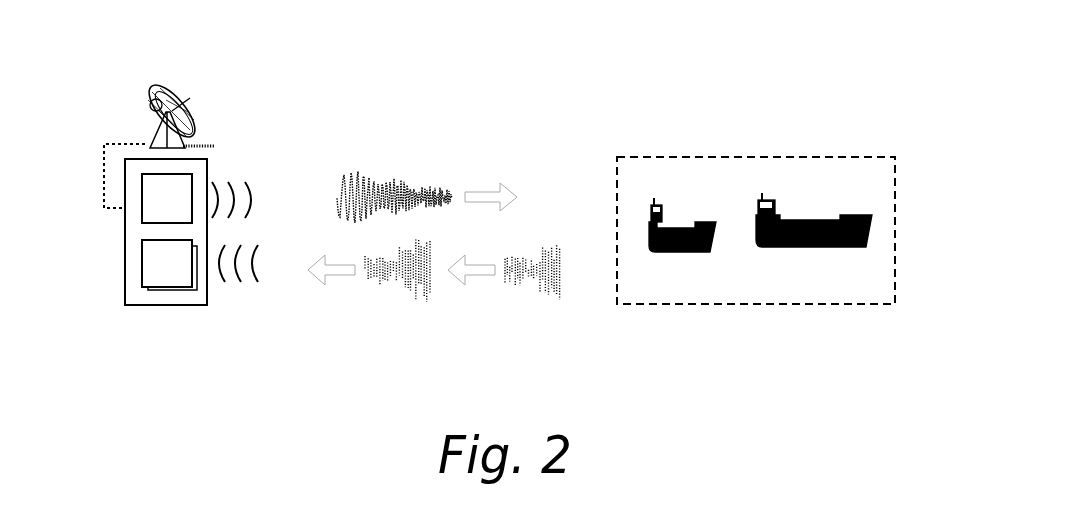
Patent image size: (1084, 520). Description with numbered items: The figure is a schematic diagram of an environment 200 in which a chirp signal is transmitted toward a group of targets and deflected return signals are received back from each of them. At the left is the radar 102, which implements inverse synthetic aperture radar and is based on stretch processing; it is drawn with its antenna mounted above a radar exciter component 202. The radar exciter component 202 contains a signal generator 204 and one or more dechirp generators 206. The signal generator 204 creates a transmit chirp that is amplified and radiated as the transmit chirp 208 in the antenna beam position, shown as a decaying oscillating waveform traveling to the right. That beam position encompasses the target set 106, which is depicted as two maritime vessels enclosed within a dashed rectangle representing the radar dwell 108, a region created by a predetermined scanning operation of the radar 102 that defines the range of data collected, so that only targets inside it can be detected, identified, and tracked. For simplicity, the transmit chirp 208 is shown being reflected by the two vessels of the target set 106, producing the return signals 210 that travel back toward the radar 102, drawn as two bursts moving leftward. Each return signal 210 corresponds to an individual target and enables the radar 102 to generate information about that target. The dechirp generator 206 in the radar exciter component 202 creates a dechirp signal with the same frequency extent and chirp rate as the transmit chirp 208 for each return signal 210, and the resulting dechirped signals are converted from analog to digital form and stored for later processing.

The environment 200 is at (768, 35).
The radar 102 is at (189, 87).
The radar exciter component 202 is at (167, 305).
The signal generator 204 is at (192, 174).
The dechirp generator 206 is at (142, 287).
The transmit chirp 208 is at (392, 153).
The return signal 210 is at (474, 315).
The target set 106 is at (728, 227).
The radar dwell 108 is at (757, 157).